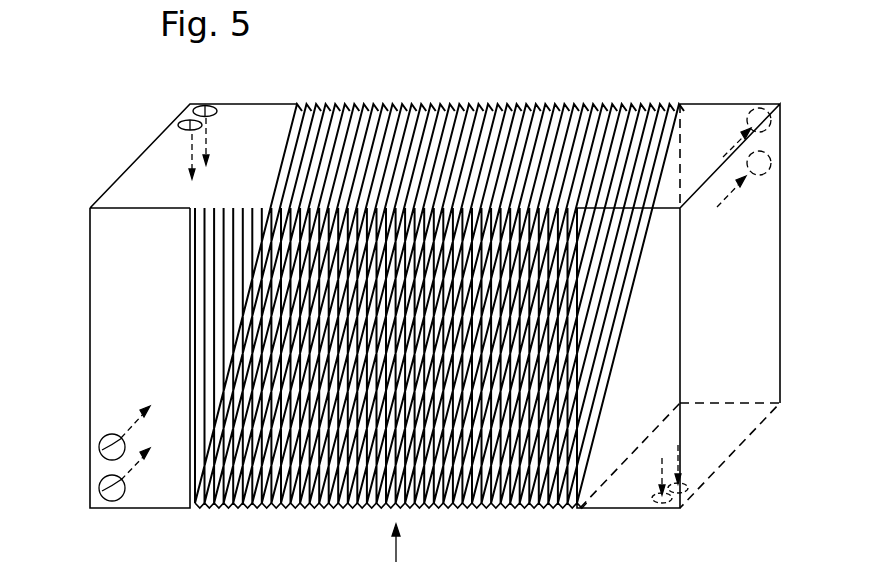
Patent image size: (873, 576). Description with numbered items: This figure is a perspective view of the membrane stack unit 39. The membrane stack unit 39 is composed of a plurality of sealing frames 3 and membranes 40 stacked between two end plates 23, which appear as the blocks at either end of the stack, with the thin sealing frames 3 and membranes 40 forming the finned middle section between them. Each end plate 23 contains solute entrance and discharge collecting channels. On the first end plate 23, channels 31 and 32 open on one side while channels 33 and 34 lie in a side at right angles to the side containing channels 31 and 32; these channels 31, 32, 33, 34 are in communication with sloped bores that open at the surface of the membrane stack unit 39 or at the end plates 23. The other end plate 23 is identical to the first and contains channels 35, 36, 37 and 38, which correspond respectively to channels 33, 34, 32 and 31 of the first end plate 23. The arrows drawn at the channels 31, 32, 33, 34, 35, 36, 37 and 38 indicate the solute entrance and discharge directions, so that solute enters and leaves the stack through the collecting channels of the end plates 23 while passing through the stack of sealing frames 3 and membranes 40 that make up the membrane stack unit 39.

The sealing frame 3 is at (213, 503).
The end plate 23 is at (105, 328).
The solute entrance and discharge collecting channel 31 is at (178, 125).
The solute entrance and discharge collecting channel 32 is at (193, 109).
The solute entrance and discharge collecting channel 33 is at (99, 447).
The solute entrance and discharge collecting channel 34 is at (99, 489).
The solute entrance and discharge collecting channel 35 is at (690, 490).
The solute entrance and discharge collecting channel 36 is at (673, 500).
The solute entrance and discharge collecting channel 37 is at (771, 120).
The solute entrance and discharge collecting channel 38 is at (772, 163).
The membrane stack unit 39 is at (398, 550).
The membrane 40 is at (203, 508).